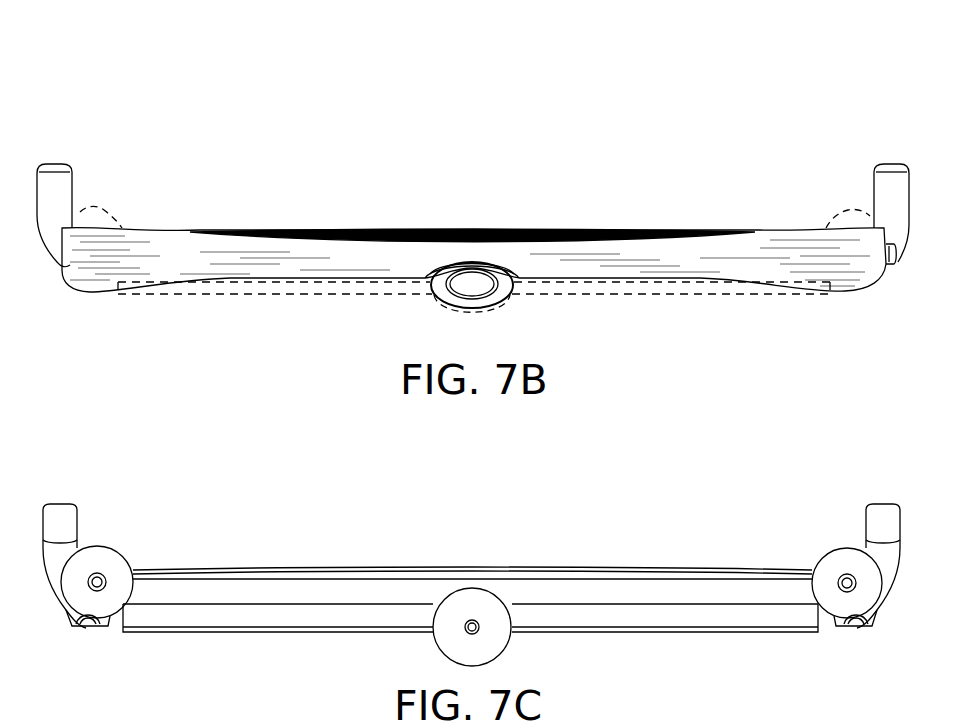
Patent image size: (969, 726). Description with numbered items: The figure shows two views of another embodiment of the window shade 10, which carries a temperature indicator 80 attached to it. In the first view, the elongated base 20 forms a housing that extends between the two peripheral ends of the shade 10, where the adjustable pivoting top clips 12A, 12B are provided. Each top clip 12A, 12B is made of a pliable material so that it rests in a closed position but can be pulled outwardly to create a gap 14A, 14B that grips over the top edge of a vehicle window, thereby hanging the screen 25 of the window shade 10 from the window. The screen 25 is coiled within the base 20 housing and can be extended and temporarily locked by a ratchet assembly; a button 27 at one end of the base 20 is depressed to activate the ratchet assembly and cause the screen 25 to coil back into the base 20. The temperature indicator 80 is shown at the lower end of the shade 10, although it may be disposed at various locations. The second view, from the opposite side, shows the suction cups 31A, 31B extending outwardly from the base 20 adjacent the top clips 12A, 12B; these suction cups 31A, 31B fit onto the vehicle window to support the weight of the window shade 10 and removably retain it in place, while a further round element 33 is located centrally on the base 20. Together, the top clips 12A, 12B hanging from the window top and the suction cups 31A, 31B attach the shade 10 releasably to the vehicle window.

In FIG. 7B, the window shade 10 is at (221, 76).
In FIG. 7C, the window shade 10 is at (240, 490).
In FIG. 7B, the top clip 12A is at (56, 176).
In FIG. 7C, the top clip 12A is at (882, 516).
In FIG. 7B, the top clip 12B is at (897, 176).
In FIG. 7C, the top clip 12B is at (58, 516).
In FIG. 7B, the gap 14A is at (72, 172).
In FIG. 7C, the gap 14A is at (866, 513).
In FIG. 7B, the gap 14B is at (874, 172).
In FIG. 7C, the gap 14B is at (80, 513).
In FIG. 7B, the base 20 is at (610, 248).
In FIG. 7C, the base 20 is at (625, 578).
In FIG. 7B, the screen 25 is at (302, 290).
In FIG. 7C, the screen 25 is at (292, 620).
In FIG. 7B, the button 27 is at (893, 266).
In FIG. 7B, the temperature indicator 80 is at (470, 280).
In FIG. 7C, the center wheel 33 is at (475, 600).
In FIG. 7C, the suction cup 31A is at (93, 601).
In FIG. 7C, the suction cup 31B is at (841, 605).